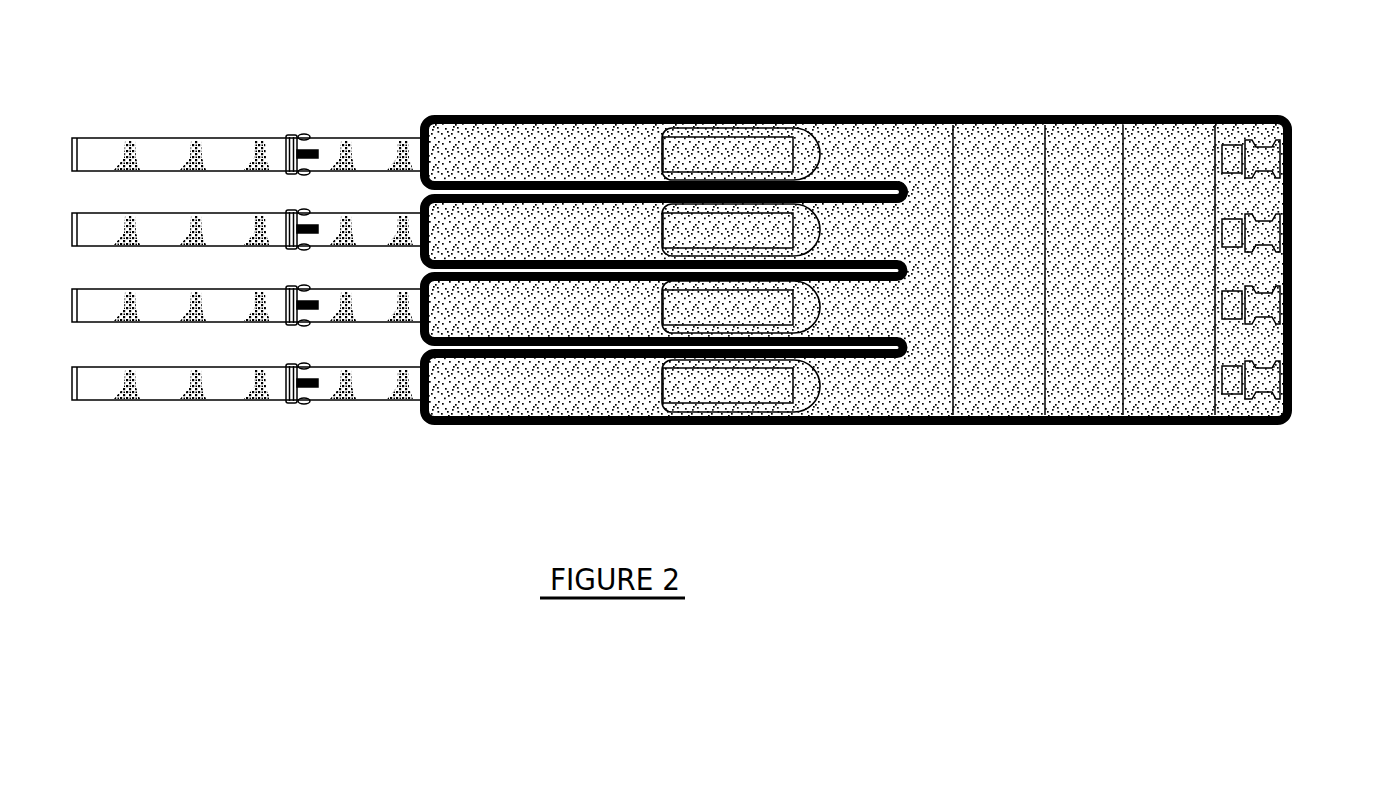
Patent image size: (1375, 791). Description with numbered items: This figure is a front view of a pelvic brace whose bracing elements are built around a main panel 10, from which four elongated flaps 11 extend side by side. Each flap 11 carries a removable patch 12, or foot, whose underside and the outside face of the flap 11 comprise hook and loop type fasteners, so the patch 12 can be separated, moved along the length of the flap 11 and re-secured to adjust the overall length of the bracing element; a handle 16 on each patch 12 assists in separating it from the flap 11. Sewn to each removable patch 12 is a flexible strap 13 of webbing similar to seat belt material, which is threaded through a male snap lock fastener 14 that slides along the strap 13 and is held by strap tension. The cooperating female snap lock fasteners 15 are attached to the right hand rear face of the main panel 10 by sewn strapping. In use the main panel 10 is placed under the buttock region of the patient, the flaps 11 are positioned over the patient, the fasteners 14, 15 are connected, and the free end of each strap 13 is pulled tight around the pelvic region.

The main panel 10 is at (1072, 165).
The elongated flap 11 is at (466, 133).
The removable patch 12 is at (768, 210).
The flexible strap 13 is at (105, 148).
The male snap lock fastener 14 is at (286, 140).
The female snap lock fastener 15 is at (1267, 158).
The handle 16 is at (818, 233).